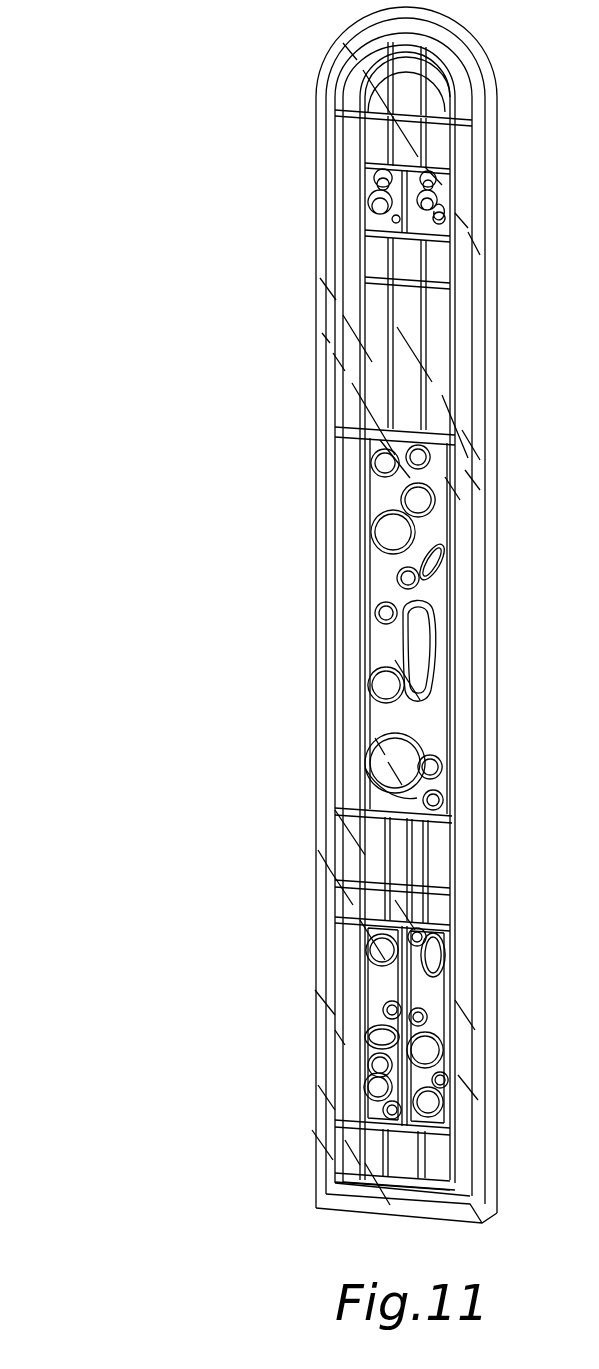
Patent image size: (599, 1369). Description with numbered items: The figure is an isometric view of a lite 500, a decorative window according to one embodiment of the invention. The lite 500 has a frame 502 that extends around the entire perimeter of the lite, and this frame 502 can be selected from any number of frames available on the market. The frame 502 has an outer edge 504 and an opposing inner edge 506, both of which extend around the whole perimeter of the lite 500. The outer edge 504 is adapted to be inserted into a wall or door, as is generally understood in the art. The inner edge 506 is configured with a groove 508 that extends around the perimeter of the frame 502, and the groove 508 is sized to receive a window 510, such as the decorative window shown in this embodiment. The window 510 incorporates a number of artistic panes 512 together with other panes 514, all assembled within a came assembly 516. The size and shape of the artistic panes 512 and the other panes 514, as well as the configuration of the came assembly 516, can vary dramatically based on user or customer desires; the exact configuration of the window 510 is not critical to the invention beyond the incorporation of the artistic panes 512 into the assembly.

The lite 500 is at (136, 68).
The frame 502 is at (312, 486).
The outer edge 504 is at (310, 959).
The inner edge 506 is at (342, 1045).
The groove 508 is at (335, 1138).
The window 510 is at (372, 785).
The artistic panes 512 is at (385, 640).
The other panes 514 is at (372, 300).
The came assembly 516 is at (360, 437).